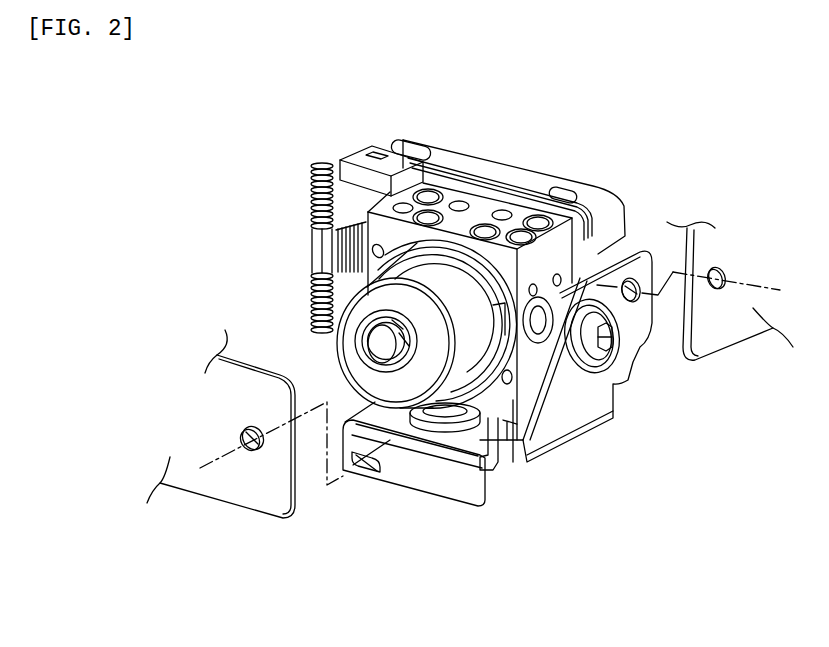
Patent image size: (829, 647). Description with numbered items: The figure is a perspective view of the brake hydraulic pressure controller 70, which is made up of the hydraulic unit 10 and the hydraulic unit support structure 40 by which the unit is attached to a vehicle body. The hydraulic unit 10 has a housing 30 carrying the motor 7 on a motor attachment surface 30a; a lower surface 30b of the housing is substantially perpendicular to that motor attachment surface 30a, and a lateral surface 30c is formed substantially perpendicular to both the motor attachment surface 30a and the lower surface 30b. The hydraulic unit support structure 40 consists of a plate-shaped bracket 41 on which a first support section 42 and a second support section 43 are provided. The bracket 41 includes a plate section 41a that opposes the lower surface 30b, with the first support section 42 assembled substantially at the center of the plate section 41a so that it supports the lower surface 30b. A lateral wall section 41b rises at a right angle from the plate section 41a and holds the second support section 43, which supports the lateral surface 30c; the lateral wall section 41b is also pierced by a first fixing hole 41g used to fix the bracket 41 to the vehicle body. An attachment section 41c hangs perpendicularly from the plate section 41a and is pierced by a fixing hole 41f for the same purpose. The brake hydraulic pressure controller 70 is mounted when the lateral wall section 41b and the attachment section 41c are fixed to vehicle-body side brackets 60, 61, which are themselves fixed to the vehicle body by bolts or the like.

The hydraulic unit 10 is at (500, 130).
The motor 7 is at (337, 362).
The housing 30 is at (490, 212).
The motor attachment surface 30a is at (498, 263).
The lower surface 30b is at (527, 462).
The lateral surface 30c is at (620, 190).
The hydraulic unit support structure 40 is at (580, 466).
The bracket 41 is at (548, 433).
The plate section 41a is at (498, 443).
The lateral wall section 41b is at (580, 417).
The attachment section 41c is at (407, 483).
The fixing hole 41f is at (370, 473).
The first fixing hole 41g is at (637, 284).
The first support section 42 is at (443, 454).
The second support section 43 is at (612, 368).
The vehicle-body side bracket 60 is at (715, 340).
The vehicle-body side bracket 61 is at (248, 497).
The brake hydraulic pressure controller 70 is at (569, 560).